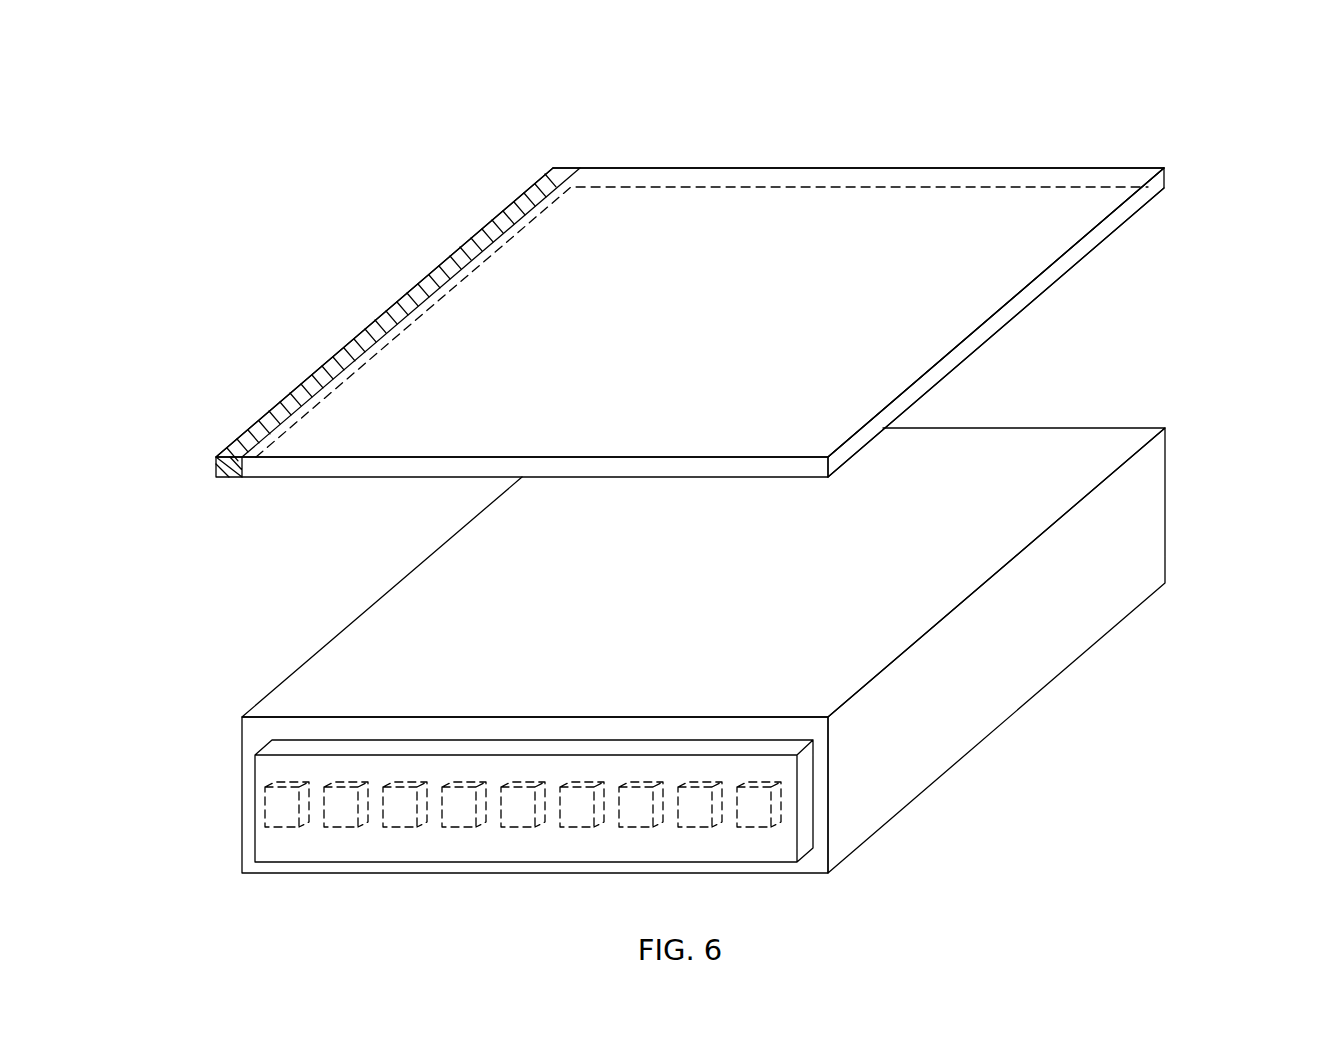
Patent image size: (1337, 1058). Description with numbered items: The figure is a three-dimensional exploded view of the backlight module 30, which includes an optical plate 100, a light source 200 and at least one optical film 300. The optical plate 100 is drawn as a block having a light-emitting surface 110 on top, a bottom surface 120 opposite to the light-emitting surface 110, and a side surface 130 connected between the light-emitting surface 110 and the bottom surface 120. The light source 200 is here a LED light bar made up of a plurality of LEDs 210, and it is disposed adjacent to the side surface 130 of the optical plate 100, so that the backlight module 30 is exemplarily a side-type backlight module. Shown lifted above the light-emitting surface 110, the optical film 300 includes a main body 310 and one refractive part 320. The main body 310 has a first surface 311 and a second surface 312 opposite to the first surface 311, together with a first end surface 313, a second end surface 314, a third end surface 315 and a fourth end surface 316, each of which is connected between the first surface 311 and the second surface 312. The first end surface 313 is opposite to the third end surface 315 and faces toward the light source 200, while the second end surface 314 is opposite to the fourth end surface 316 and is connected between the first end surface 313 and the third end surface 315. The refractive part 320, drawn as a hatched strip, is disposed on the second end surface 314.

The backlight module 30 is at (338, 125).
The optical film 300 is at (1040, 127).
The main body 310 is at (958, 222).
The first surface 311 is at (1082, 203).
The second surface 312 is at (1143, 205).
The first end surface 313 is at (327, 468).
The second end surface 314 is at (573, 183).
The third end surface 315 is at (775, 178).
The fourth end surface 316 is at (1077, 253).
The refractive part 320 is at (287, 405).
The optical plate 100 is at (1160, 376).
The light-emitting surface 110 is at (1063, 453).
The bottom surface 120 is at (1058, 680).
The side surface 130 is at (820, 815).
The light source 200 is at (432, 833).
The LED 210 is at (283, 808).